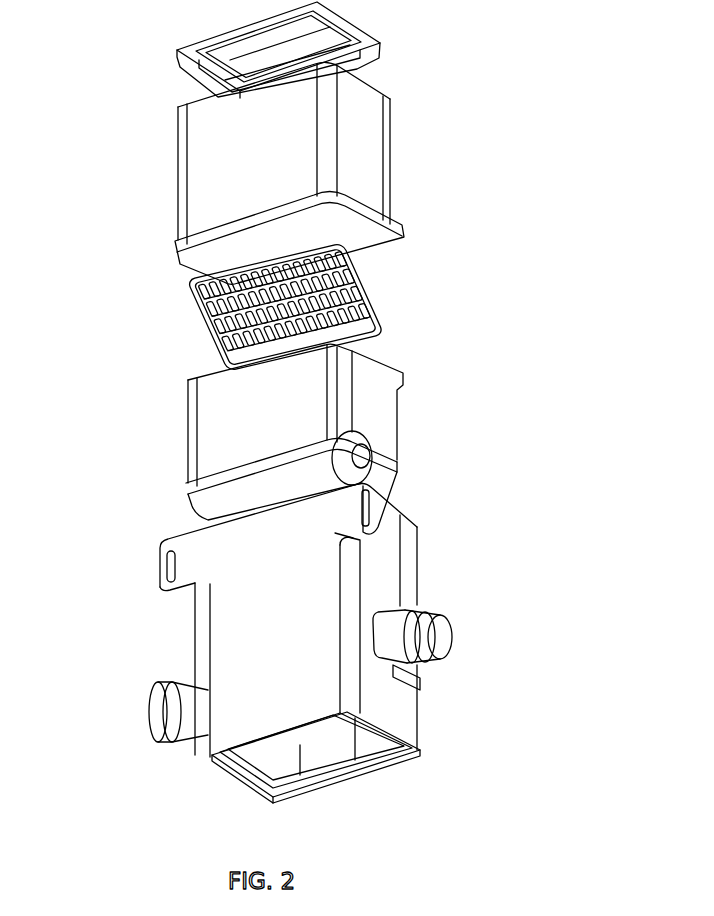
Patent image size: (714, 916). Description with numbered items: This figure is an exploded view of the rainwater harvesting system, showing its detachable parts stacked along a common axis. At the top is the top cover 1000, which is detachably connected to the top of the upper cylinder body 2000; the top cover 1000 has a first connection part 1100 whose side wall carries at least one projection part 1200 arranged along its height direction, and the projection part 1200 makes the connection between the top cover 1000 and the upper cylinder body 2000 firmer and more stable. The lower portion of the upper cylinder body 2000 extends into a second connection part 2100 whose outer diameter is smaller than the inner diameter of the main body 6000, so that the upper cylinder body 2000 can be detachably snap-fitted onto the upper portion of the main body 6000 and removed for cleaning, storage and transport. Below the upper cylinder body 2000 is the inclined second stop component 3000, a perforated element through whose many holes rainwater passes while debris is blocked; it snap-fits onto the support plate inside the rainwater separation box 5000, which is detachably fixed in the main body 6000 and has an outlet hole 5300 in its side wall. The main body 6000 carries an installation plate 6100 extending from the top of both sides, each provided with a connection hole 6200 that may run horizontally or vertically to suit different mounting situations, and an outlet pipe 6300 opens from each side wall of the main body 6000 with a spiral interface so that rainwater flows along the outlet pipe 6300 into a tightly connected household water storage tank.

The top cover 1000 is at (268, 51).
The first connection part 1100 is at (380, 34).
The projection part 1200 is at (380, 53).
The upper cylinder body 2000 is at (281, 173).
The second connection part 2100 is at (398, 222).
The second stop component 3000 is at (300, 313).
The rainwater separation box 5000 is at (274, 439).
The outlet hole 5300 is at (380, 462).
The main body 6000 is at (281, 644).
The installation plate 6100 is at (215, 564).
The connection hole 6200 is at (192, 570).
The outlet pipe 6300 is at (393, 627).